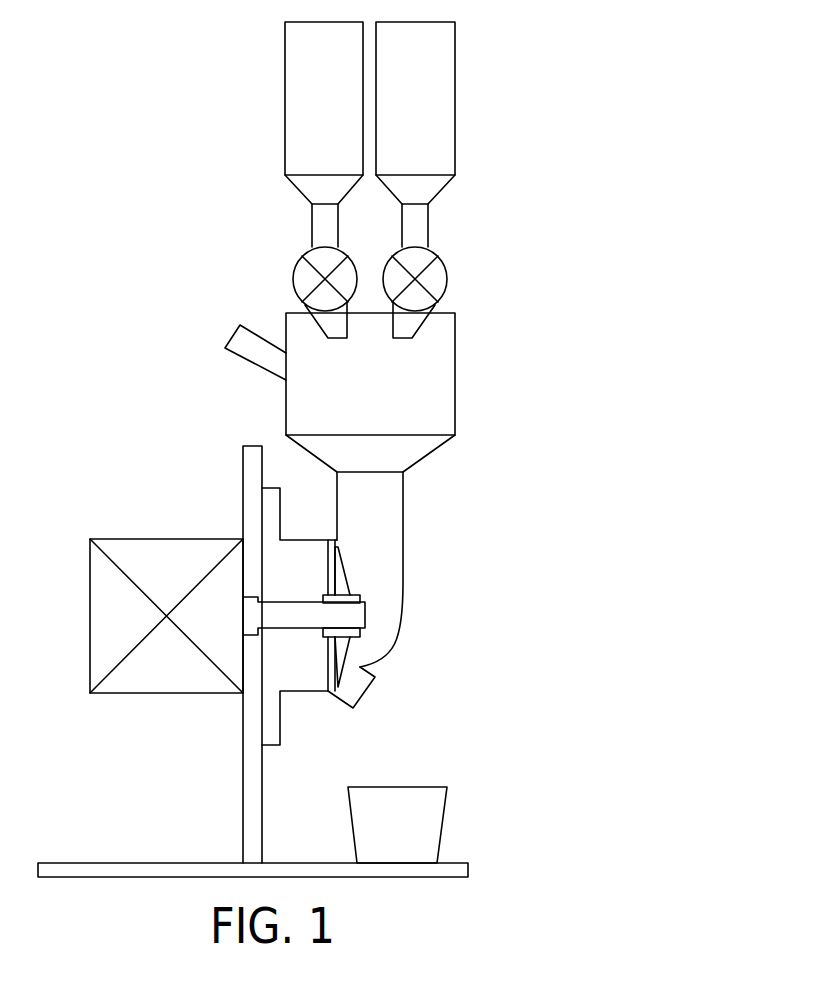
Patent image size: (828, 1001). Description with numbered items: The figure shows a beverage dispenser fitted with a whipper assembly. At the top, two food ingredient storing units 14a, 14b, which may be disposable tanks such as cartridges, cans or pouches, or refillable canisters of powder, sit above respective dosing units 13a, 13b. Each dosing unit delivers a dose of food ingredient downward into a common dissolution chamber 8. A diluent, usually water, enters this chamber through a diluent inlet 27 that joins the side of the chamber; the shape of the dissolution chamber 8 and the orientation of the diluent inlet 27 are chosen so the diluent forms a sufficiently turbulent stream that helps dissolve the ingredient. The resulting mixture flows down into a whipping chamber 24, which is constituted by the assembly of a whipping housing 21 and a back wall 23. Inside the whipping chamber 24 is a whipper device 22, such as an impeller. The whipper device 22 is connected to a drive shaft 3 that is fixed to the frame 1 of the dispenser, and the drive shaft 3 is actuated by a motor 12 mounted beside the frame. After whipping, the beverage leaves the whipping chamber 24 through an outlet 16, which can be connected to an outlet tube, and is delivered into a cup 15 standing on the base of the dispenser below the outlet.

The frame 1 is at (243, 456).
The drive shaft 3 is at (297, 628).
The dissolution chamber 8 is at (455, 332).
The motor 12 is at (90, 548).
The dosing unit 13a is at (293, 277).
The dosing unit 13b is at (448, 277).
The food ingredient storing unit 14a is at (312, 226).
The food ingredient storing unit 14b is at (430, 226).
The cup 15 is at (444, 810).
The outlet 16 is at (347, 713).
The whipping housing 21 is at (400, 618).
The whipper device 22 is at (352, 593).
The back wall 23 is at (328, 552).
The whipping chamber 24 is at (367, 636).
The diluent inlet 27 is at (252, 361).